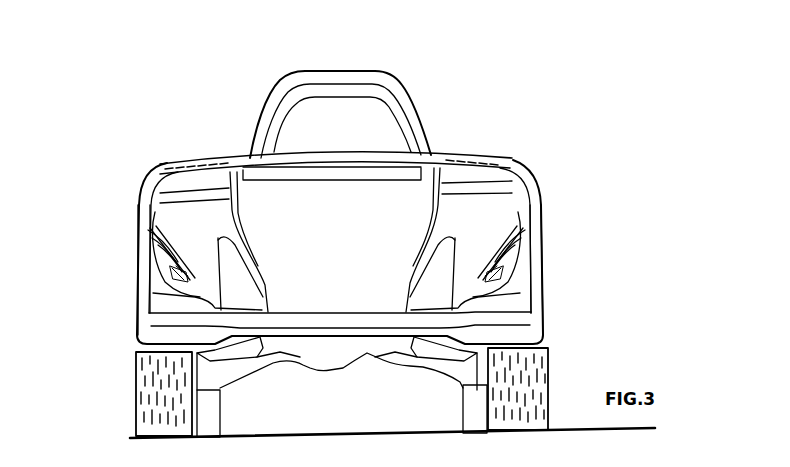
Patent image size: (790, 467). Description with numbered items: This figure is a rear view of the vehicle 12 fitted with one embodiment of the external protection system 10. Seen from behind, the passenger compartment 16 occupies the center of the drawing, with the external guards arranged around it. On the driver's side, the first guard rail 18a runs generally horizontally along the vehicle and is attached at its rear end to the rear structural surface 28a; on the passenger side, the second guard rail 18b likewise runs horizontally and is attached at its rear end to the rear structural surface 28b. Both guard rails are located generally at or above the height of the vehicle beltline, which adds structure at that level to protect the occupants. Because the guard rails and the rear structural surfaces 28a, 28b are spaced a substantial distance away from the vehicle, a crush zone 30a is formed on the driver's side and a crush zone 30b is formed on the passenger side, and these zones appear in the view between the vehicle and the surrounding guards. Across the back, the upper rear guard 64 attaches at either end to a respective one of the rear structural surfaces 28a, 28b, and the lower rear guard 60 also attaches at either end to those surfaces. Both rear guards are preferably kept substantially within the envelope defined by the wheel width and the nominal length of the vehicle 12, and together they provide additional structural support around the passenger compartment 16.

The external protection system 10 is at (540, 147).
The vehicle 12 is at (423, 53).
The passenger compartment 16 is at (383, 120).
The upper rear guard 64 is at (198, 162).
The first guard rail 18a is at (147, 225).
The second guard rail 18b is at (519, 211).
The rear structural surface 28a is at (139, 273).
The rear structural surface 28b is at (533, 265).
The crush zone 30a is at (200, 235).
The crush zone 30b is at (478, 232).
The lower rear guard 60 is at (323, 320).